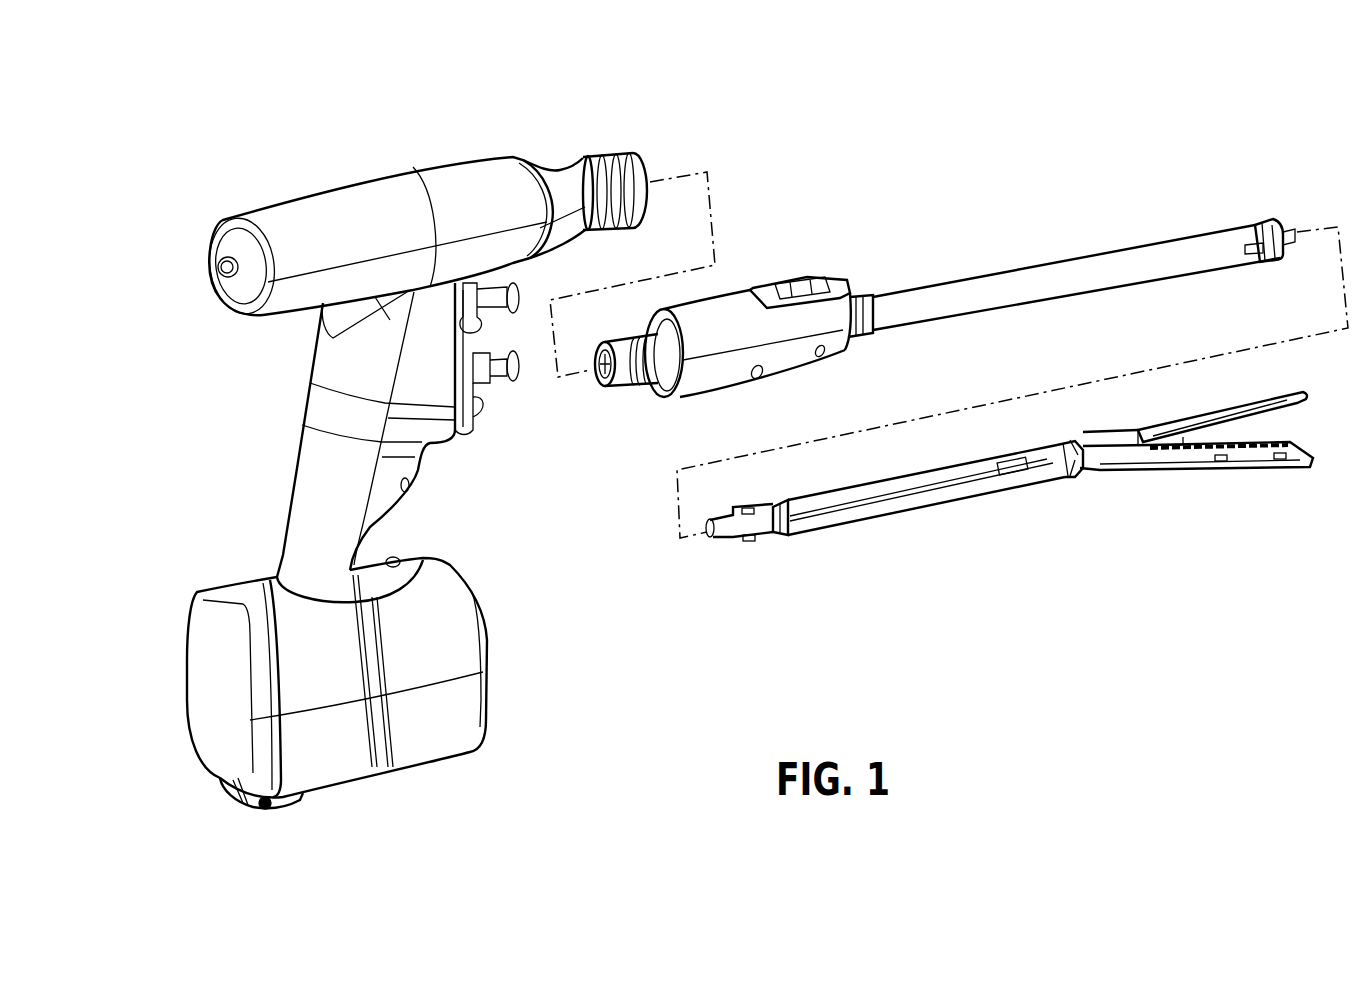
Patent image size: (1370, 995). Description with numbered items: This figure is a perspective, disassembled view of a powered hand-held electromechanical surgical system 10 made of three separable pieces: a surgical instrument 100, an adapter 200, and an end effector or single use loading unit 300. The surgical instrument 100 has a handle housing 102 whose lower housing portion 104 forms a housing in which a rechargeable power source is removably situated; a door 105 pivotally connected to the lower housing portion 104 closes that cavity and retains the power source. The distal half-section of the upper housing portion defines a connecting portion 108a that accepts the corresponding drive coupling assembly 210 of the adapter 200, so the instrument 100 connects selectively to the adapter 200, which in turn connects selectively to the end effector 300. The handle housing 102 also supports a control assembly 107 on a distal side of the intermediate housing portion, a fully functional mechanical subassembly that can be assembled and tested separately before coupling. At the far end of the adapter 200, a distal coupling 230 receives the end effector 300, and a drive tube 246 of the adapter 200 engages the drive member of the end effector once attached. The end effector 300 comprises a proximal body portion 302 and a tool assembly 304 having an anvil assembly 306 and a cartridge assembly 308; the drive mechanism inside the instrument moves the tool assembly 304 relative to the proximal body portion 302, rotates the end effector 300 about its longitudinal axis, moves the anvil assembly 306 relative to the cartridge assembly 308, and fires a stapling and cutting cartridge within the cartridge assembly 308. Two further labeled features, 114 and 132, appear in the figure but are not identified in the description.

The surgical system 10 is at (947, 154).
The surgical instrument 100 is at (406, 435).
The handle housing 102 is at (242, 206).
The lower housing portion 104 is at (491, 621).
The door 105 is at (200, 670).
The control assembly 107 is at (475, 442).
The connecting portion 108a is at (608, 152).
The nose portion of handle housing 114 is at (546, 167).
The connecting portion / coupling 132 is at (573, 268).
The adapter 200 is at (974, 282).
The drive coupling assembly 210 is at (624, 378).
The distal coupling 230 is at (1262, 222).
The drive tube 246 is at (1296, 230).
The end effector 300 is at (1034, 459).
The proximal body portion 302 is at (842, 525).
The tool assembly 304 is at (1210, 439).
The anvil assembly 306 is at (1298, 388).
The cartridge assembly 308 is at (1297, 468).